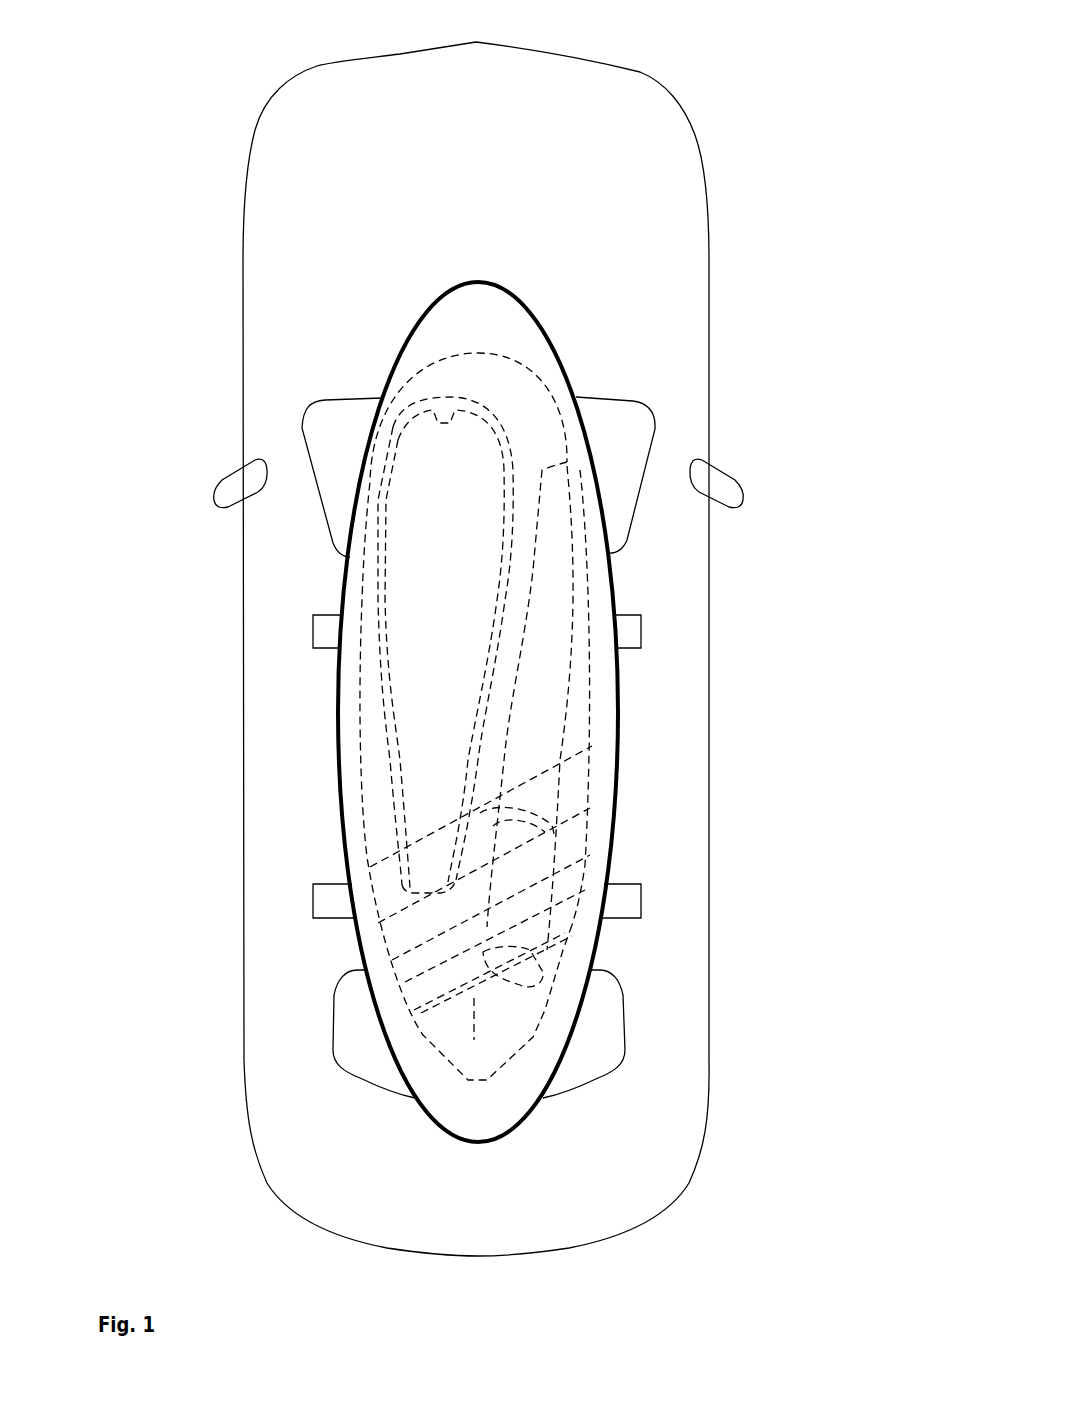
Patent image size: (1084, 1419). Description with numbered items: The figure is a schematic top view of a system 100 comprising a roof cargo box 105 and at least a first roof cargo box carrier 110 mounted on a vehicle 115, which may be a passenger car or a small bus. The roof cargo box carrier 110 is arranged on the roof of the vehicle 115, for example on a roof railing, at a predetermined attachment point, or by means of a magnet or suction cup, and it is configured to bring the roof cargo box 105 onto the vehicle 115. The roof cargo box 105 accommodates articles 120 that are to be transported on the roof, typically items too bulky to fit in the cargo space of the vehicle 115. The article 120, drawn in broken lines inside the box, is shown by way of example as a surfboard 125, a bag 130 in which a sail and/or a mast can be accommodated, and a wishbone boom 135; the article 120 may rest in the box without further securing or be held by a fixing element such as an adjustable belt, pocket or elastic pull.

The system 100 is at (788, 67).
The roof cargo box 105 is at (557, 352).
The roof cargo box carrier 110 is at (665, 633).
The vehicle 115 is at (710, 708).
The article 120 is at (635, 879).
The surfboard 125 is at (582, 872).
The bag 130 is at (553, 837).
The wishbone boom 135 is at (463, 802).